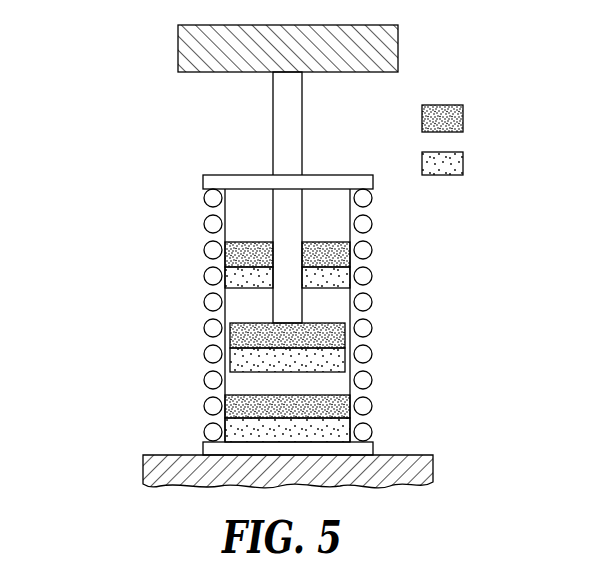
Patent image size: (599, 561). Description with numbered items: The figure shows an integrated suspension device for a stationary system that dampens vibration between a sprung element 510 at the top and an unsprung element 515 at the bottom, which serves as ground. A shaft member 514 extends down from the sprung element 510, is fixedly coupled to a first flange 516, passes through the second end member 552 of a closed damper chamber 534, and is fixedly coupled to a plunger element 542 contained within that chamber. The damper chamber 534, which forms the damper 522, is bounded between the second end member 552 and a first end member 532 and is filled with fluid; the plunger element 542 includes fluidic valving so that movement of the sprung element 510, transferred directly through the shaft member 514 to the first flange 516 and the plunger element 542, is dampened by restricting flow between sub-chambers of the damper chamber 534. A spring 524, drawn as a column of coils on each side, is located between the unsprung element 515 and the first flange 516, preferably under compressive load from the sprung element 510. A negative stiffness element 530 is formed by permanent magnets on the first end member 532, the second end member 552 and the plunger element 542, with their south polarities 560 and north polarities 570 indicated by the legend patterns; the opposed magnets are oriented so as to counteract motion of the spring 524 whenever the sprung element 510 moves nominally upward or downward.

The sprung element 510 is at (193, 52).
The shaft member 514 is at (273, 125).
The unsprung element 515 is at (145, 468).
The first flange 516 is at (205, 181).
The damper 522 is at (334, 303).
The spring 524 is at (372, 250).
The negative stiffness element 530 is at (299, 315).
The first end member 532 is at (215, 428).
The damper chamber 534 is at (250, 384).
The plunger element 542 is at (240, 338).
The second end member 552 is at (238, 278).
The south polarities 560 is at (465, 119).
The north polarities 570 is at (465, 165).